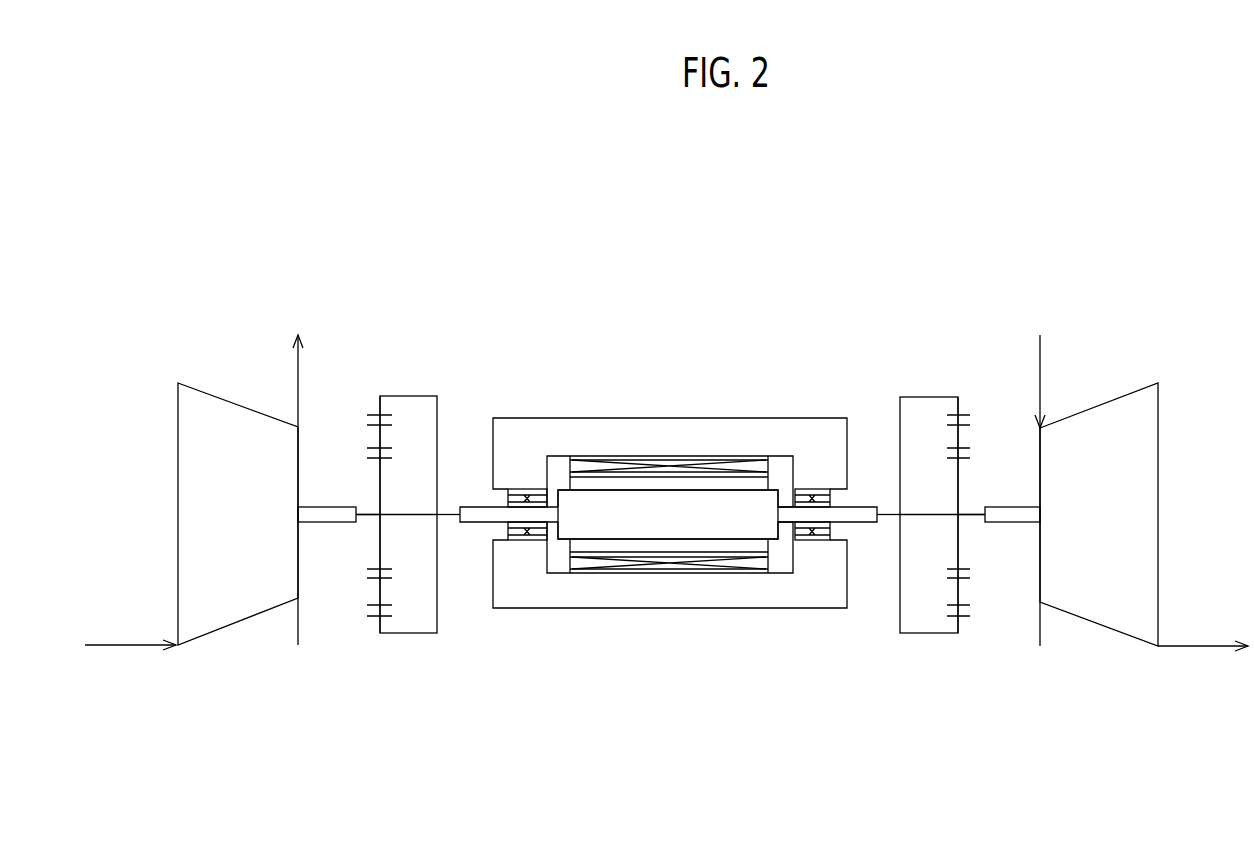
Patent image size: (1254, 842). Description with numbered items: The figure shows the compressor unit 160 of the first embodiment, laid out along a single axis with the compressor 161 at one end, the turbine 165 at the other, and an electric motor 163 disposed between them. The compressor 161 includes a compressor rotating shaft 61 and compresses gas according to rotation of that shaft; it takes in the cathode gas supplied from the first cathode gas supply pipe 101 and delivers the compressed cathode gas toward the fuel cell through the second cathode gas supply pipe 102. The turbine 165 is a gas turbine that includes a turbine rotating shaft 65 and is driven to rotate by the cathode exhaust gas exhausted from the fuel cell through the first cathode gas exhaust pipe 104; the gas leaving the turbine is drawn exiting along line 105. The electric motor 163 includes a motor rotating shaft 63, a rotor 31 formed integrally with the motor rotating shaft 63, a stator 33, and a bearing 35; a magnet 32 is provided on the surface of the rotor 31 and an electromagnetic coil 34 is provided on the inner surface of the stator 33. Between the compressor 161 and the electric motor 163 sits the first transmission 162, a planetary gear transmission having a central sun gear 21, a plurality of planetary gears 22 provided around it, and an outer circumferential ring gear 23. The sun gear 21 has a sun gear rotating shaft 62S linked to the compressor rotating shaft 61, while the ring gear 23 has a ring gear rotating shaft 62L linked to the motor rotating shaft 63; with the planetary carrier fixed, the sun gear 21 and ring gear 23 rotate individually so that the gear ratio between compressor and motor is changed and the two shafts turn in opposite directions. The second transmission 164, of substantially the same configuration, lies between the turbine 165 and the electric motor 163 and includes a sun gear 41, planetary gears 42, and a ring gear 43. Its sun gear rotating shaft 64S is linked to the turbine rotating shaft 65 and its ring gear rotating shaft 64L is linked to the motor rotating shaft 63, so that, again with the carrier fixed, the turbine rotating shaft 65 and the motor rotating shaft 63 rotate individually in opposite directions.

The compressor unit 160 is at (1089, 267).
The compressor 161 is at (237, 628).
The first transmission 162 is at (410, 340).
The electric motor 163 is at (685, 340).
The second transmission 164 is at (930, 340).
The turbine 165 is at (1100, 628).
The first cathode gas supply pipe 101 is at (127, 648).
The second cathode gas supply pipe 102 is at (298, 370).
The first cathode gas exhaust pipe 104 is at (1042, 363).
The discharged exhaust gas 105 is at (1205, 648).
The sun gear 21 is at (382, 485).
The planetary gears 22 is at (375, 592).
The ring gear 23 is at (388, 394).
The rotor 31 is at (673, 490).
The magnet 32 is at (570, 484).
The stator 33 is at (623, 418).
The electromagnetic coil 34 is at (572, 468).
The bearing 35 is at (507, 532).
The sun gear 41 is at (957, 483).
The planetary gears 42 is at (963, 592).
The ring gear 43 is at (948, 395).
The compressor rotating shaft 61 is at (325, 528).
The sun gear rotating shaft 62S is at (367, 518).
The ring gear rotating shaft 62L is at (448, 520).
The motor rotating shaft 63 is at (858, 525).
The ring gear rotating shaft 64L is at (885, 525).
The sun gear rotating shaft 64S is at (972, 517).
The turbine rotating shaft 65 is at (1013, 525).